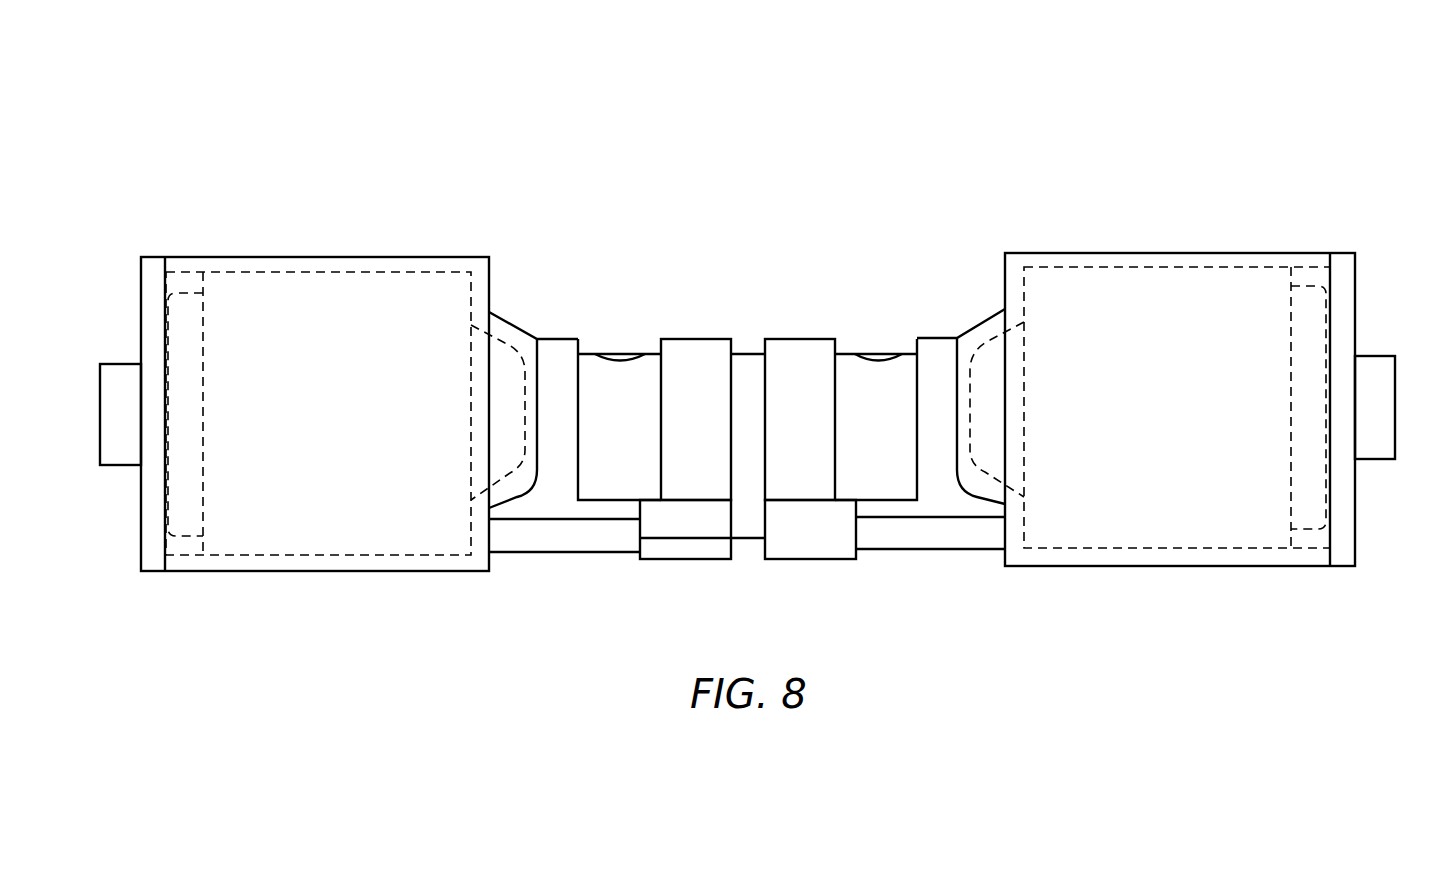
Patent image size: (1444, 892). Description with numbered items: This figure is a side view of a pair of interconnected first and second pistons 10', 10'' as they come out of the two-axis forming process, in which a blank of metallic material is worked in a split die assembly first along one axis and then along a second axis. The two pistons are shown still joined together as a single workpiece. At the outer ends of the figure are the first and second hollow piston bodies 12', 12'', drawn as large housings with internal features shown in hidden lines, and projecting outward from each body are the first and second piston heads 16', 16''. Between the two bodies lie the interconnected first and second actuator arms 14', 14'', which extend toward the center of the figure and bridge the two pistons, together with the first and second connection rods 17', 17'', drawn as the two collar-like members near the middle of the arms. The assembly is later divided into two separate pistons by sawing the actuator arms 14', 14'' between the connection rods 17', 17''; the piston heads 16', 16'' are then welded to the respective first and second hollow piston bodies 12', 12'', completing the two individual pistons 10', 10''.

The first piston 10' is at (390, 330).
The second piston 10'' is at (1105, 325).
The first hollow piston body 12' is at (345, 379).
The second hollow piston body 12'' is at (1150, 373).
The first actuator arm 14' is at (619, 397).
The second actuator arm 14'' is at (876, 397).
The first piston head 16' is at (106, 385).
The second piston head 16'' is at (1394, 378).
The first connection rod 17' is at (702, 423).
The second connection rod 17'' is at (810, 423).